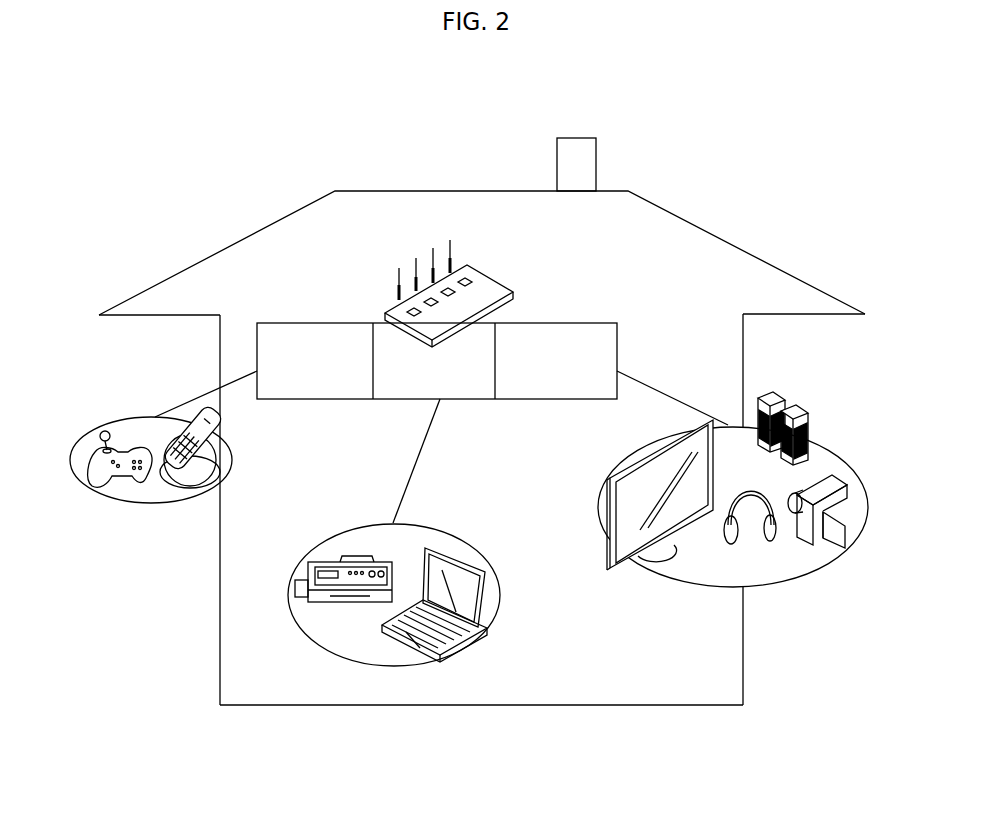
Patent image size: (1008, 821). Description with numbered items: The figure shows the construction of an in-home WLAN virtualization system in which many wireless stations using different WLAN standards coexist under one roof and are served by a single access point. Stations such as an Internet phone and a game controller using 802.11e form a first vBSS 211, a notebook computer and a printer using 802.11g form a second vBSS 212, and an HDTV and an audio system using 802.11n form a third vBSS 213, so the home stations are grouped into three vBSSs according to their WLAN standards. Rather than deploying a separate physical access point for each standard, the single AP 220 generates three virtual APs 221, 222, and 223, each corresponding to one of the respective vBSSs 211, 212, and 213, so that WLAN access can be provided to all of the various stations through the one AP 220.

The AP 220 is at (493, 272).
The virtual AP 221 is at (317, 400).
The virtual AP 222 is at (469, 400).
The virtual AP 223 is at (536, 400).
The vBSS 211 is at (133, 504).
The vBSS 212 is at (393, 667).
The vBSS 213 is at (792, 587).